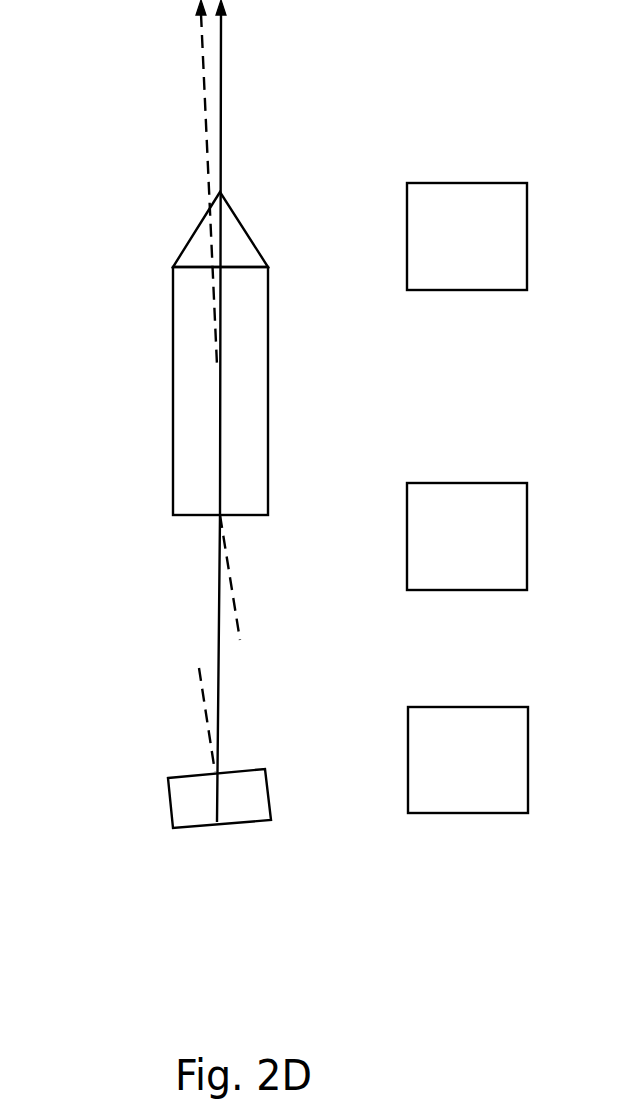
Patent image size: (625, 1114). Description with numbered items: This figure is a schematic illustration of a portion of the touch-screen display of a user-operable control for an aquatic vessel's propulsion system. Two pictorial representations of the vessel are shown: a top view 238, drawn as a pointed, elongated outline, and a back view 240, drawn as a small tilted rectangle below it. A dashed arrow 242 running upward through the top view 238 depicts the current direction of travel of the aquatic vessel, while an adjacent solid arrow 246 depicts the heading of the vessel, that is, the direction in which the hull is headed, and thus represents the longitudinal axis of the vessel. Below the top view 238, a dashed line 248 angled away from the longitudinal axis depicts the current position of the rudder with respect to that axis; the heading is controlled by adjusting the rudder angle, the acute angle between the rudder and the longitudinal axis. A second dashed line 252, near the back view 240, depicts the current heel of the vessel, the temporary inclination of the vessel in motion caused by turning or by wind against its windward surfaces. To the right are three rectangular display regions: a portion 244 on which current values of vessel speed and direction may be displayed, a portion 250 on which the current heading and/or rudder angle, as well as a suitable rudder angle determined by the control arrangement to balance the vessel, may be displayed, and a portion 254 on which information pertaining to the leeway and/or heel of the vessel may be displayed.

The top view 238 is at (173, 303).
The back view 240 is at (167, 808).
The dashed arrow 242 is at (202, 67).
The portion 244 is at (488, 250).
The arrow 246 is at (222, 93).
The dashed line 248 is at (230, 590).
The portion 250 is at (488, 550).
The dashed line 252 is at (200, 690).
The portion 254 is at (489, 773).